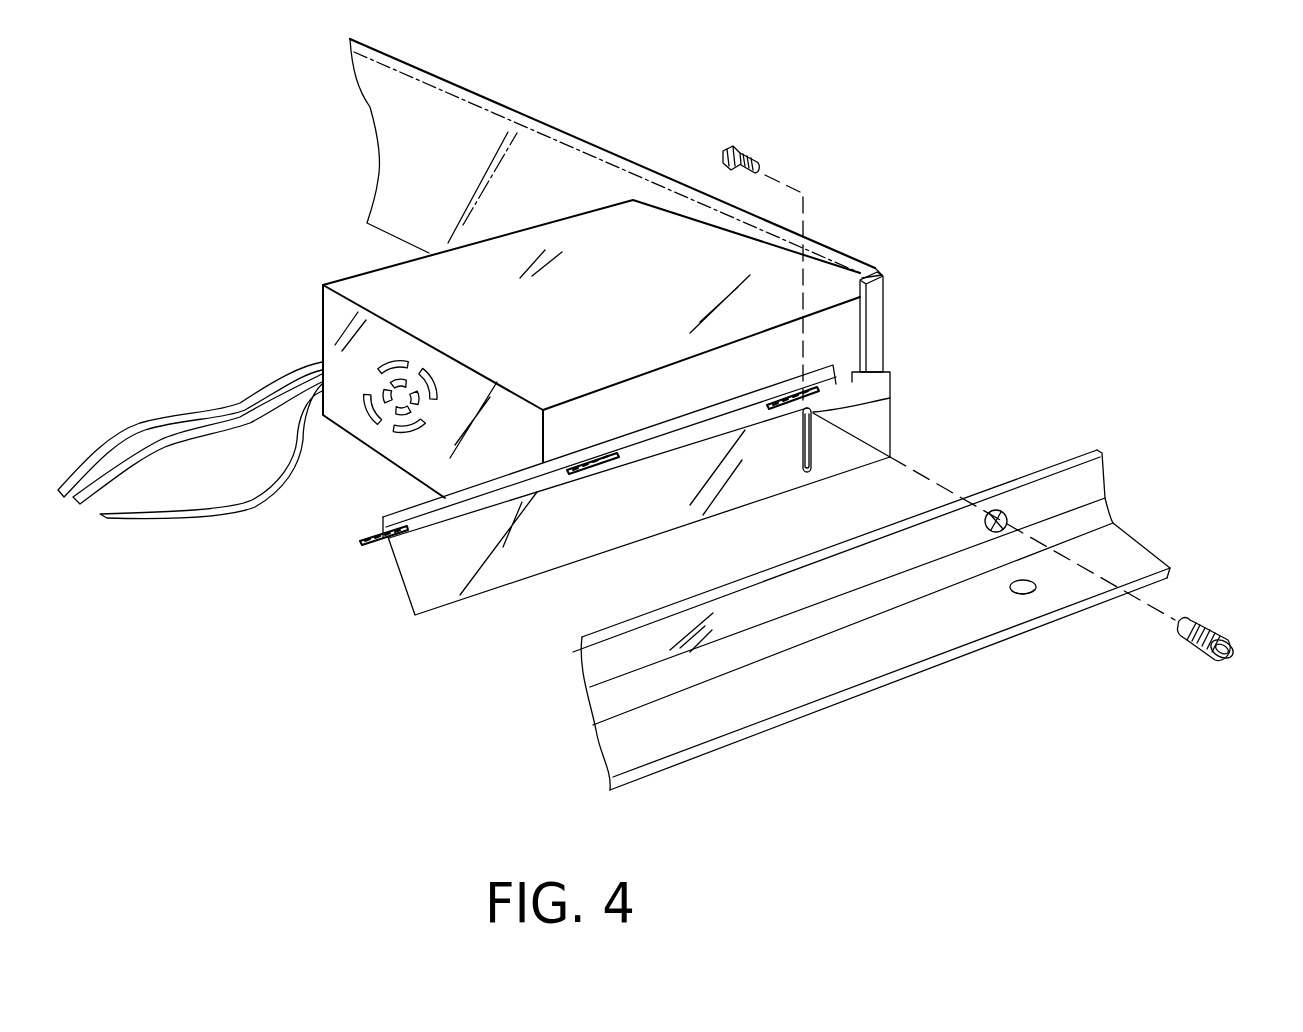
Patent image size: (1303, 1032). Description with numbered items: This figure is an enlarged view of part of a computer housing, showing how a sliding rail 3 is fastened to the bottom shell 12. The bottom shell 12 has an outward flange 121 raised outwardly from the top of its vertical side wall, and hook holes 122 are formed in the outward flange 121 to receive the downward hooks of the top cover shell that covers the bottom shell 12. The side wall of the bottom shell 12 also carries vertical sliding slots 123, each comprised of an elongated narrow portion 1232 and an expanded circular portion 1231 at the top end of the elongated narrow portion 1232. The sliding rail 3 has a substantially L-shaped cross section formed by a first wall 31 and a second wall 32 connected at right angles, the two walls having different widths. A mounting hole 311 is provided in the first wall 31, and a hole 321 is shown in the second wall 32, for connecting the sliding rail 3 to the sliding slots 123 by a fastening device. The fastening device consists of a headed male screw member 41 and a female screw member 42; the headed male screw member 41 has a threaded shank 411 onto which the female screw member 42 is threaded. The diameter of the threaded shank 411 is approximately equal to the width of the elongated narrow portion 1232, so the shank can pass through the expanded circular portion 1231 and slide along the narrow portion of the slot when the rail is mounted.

The sliding rail 3 is at (895, 600).
The bottom shell 12 is at (485, 575).
The first wall 31 is at (1097, 483).
The second wall 32 is at (855, 667).
The headed male screw member 41 is at (735, 148).
The female screw member 42 is at (1220, 630).
The outward flange 121 is at (427, 522).
The hook hole 122 is at (600, 471).
The vertical sliding slot 123 is at (815, 443).
The mounting hole 311 is at (1007, 511).
The hole 321 is at (1033, 598).
The threaded shank 411 is at (748, 150).
The expanded circular portion 1231 is at (890, 388).
The elongated narrow portion 1232 is at (805, 476).